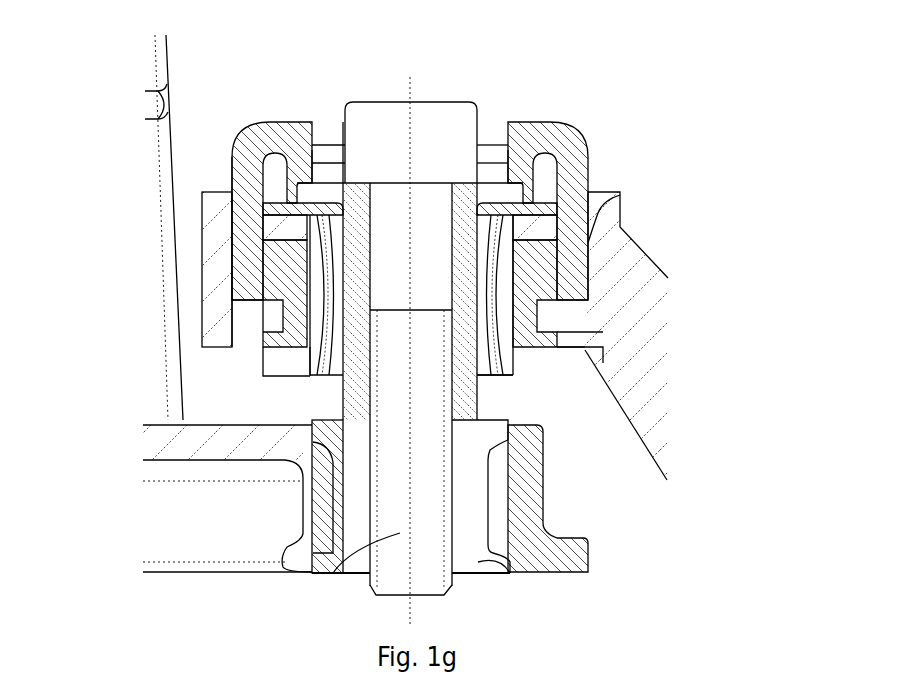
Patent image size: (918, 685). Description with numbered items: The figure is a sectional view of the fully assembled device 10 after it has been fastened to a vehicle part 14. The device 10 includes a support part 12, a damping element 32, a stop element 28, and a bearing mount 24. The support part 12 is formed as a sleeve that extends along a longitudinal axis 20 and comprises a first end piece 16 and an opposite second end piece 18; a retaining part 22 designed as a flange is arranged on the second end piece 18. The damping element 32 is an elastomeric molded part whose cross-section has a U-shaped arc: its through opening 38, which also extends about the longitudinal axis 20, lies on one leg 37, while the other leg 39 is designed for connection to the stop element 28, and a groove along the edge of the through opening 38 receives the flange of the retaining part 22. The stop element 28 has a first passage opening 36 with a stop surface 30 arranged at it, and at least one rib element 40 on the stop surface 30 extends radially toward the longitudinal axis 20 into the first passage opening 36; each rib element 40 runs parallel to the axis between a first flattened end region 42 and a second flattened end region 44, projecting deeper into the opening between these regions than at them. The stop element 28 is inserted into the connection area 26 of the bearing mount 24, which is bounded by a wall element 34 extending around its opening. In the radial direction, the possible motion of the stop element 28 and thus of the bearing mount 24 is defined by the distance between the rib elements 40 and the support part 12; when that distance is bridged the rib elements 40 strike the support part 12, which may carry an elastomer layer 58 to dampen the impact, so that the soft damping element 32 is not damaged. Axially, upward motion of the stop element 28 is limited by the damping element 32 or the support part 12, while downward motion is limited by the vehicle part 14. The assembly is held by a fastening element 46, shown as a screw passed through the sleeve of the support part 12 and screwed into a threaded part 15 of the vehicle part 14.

The device 10 is at (578, 63).
The support part 12 is at (513, 287).
The vehicle part 14 is at (202, 493).
The threaded part 15 is at (510, 573).
The first end piece 16 is at (463, 395).
The second end piece 18 is at (232, 243).
The longitudinal axis 20 is at (410, 77).
The retaining part 22 is at (325, 185).
The bearing mount 24 is at (575, 336).
The connection area 26 is at (557, 314).
The stop element 28 is at (588, 287).
The stop surface 30 is at (283, 300).
The damping element 32 is at (570, 133).
The wall element 34 is at (217, 268).
The first passage opening 36 is at (310, 373).
The leg 37 is at (488, 180).
The through opening 38 is at (330, 173).
The leg 39 is at (557, 300).
The rib element 40 is at (310, 290).
The first flattened end region 42 is at (312, 233).
The second flattened end region 44 is at (305, 345).
The fastening element 46 is at (333, 573).
The elastomer layer 58 is at (513, 267).